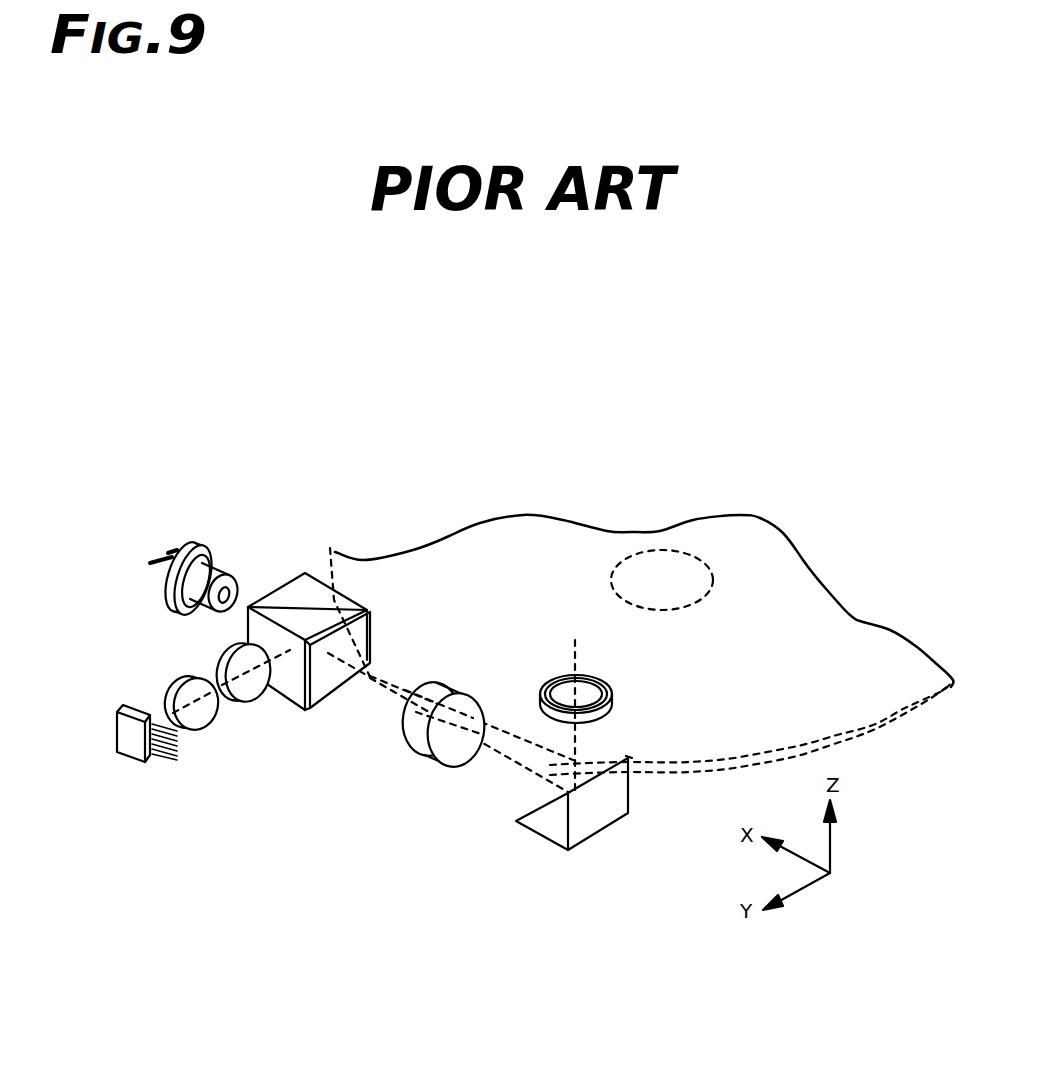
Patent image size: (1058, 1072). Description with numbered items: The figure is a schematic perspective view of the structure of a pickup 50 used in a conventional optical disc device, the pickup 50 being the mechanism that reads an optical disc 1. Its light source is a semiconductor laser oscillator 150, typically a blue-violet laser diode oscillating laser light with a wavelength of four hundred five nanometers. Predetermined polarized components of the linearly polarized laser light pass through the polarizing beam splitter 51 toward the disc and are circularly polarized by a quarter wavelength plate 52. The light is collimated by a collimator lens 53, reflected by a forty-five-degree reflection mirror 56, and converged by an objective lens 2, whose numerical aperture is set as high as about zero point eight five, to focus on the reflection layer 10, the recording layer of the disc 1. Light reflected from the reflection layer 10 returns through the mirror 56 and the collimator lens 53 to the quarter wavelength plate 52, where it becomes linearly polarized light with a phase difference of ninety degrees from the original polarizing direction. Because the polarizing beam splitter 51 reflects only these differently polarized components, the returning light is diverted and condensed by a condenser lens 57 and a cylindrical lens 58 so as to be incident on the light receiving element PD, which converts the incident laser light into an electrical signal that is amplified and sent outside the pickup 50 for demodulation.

The optical disc 1 is at (852, 700).
The objective lens 2 is at (613, 698).
The reflection layer 10 is at (665, 775).
The pickup 50 is at (187, 821).
The polarizing beam splitter 51 is at (288, 585).
The quarter wavelength plate 52 is at (330, 693).
The collimator lens 53 is at (463, 683).
The 45-degree reflection mirror 56 is at (528, 840).
The condenser lens 57 is at (225, 656).
The cylindrical lens 58 is at (170, 690).
The semiconductor laser oscillator 150 is at (163, 593).
The light receiving element PD is at (127, 762).